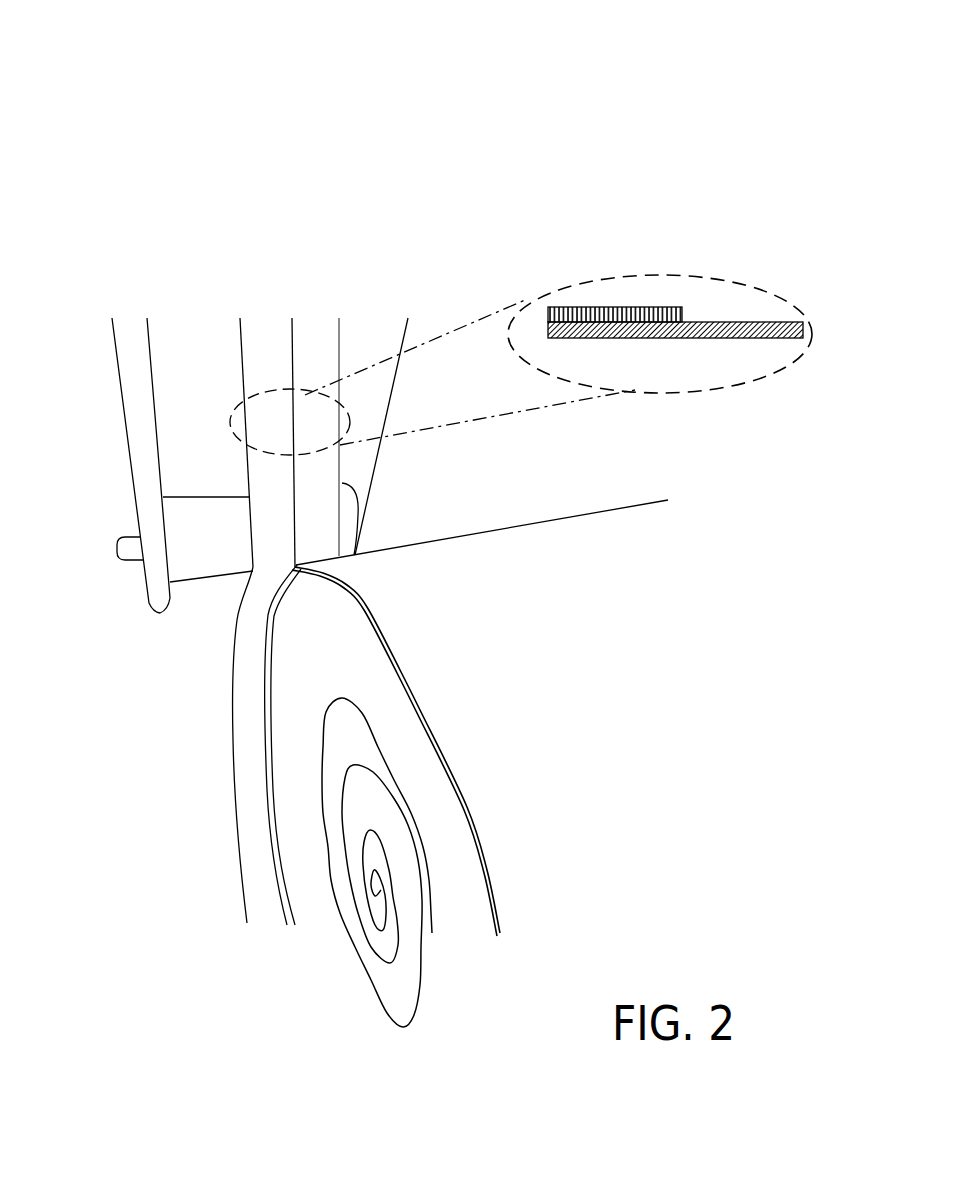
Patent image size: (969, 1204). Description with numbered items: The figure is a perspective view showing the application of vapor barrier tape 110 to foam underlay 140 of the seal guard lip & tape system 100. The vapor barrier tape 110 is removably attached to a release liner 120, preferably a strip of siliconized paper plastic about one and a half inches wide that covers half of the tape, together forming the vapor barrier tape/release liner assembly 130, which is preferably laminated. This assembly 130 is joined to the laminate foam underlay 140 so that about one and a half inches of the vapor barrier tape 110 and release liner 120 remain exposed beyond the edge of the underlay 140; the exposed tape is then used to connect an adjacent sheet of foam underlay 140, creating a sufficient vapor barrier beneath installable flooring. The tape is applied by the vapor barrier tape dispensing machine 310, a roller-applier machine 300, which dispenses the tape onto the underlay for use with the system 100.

The seal guard lip & tape system 100 is at (594, 111).
The vapor barrier tape 110 is at (707, 307).
The release liner 120 is at (329, 354).
The vapor barrier tape/release liner assembly 130 is at (260, 299).
The foam underlay 140 is at (600, 677).
The roller-applier machine 300 is at (263, 173).
The vapor barrier tape dispensing machine 310 is at (319, 201).